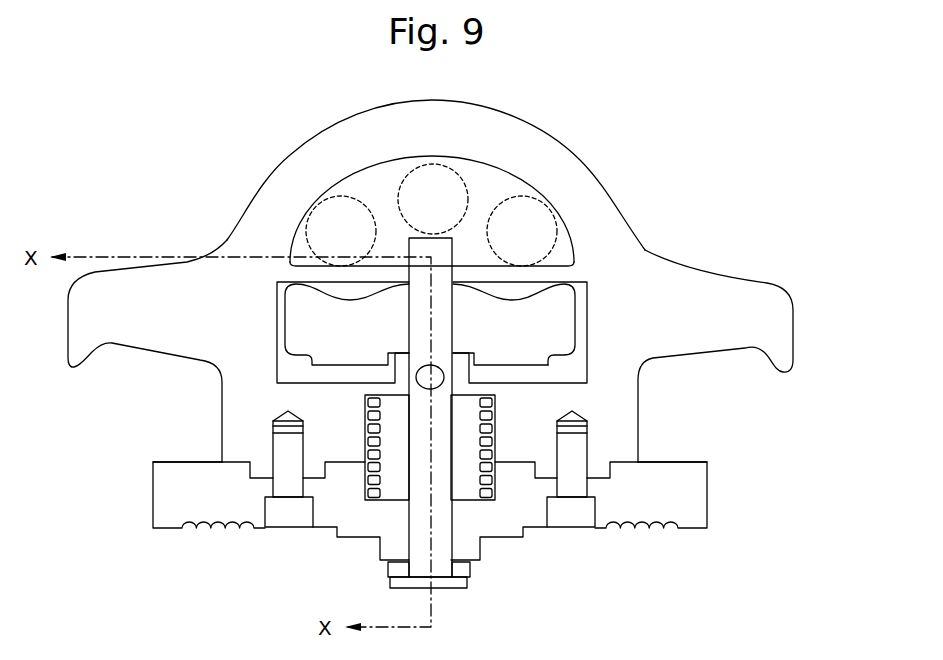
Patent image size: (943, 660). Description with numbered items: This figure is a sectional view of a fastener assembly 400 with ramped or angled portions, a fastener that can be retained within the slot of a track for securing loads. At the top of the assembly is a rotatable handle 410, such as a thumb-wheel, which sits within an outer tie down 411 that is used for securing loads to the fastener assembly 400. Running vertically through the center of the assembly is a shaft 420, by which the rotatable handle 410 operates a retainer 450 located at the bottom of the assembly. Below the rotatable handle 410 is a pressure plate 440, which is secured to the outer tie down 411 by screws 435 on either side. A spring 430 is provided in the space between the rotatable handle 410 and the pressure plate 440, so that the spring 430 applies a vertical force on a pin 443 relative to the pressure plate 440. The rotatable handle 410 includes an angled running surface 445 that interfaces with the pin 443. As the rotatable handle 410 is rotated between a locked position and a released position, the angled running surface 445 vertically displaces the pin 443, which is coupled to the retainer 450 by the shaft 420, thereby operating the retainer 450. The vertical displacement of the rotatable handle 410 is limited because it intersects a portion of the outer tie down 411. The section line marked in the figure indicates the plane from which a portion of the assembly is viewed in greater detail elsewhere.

The fastener assembly 400 is at (468, 281).
The rotatable handle 410 is at (492, 341).
The outer tie down 411 is at (778, 327).
The shaft 420 is at (439, 413).
The spring 430 is at (490, 443).
The screws 435 is at (283, 445).
The pressure plate 440 is at (692, 500).
The pin 443 is at (425, 368).
The angled running surface 445 is at (545, 371).
The retainer 450 is at (393, 570).